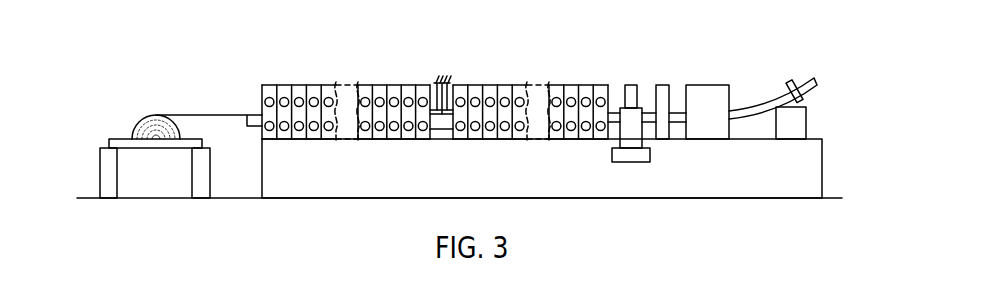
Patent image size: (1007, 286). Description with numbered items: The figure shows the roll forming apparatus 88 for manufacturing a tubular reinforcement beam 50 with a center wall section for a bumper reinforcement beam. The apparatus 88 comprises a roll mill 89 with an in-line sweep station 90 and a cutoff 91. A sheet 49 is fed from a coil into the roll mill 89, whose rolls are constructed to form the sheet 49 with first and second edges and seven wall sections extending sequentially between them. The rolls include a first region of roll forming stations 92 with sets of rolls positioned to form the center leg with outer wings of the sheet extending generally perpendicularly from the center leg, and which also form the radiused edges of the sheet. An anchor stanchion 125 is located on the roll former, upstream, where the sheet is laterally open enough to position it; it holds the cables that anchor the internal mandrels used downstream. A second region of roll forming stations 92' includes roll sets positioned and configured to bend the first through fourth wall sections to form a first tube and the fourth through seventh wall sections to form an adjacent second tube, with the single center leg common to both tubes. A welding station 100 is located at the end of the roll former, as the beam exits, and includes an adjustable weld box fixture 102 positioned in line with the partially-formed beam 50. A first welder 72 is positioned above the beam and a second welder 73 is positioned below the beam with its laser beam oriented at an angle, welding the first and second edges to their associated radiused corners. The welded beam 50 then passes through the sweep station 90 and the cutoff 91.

The apparatus 88 is at (150, 88).
The sheet 49 is at (208, 115).
The roll mill 89 is at (316, 186).
The first region of roll forming stations 92 is at (346, 92).
The anchor stanchion 125 is at (448, 78).
The second region of roll forming stations 92' is at (530, 92).
The welding station 100 is at (653, 78).
The first welder 72 is at (627, 100).
The adjustable weld box fixture 102 is at (638, 130).
The second welder 73 is at (636, 142).
The in-line sweep station 90 is at (729, 78).
The tubular reinforcement beam 50 is at (808, 73).
The cutoff 91 is at (805, 113).